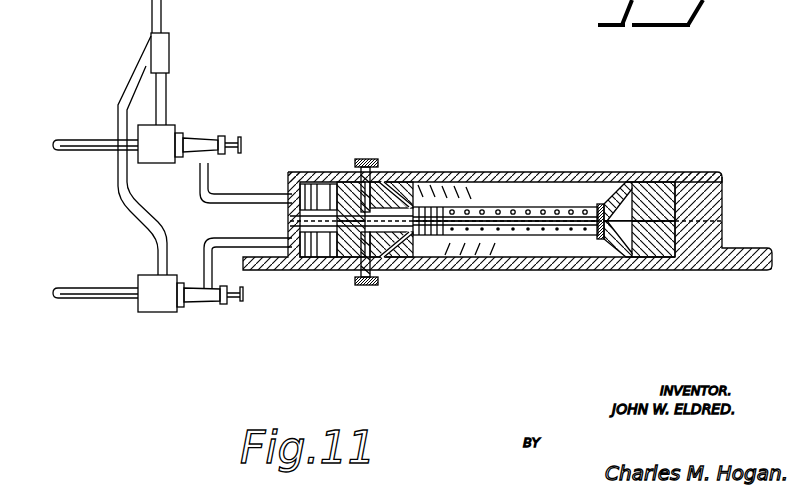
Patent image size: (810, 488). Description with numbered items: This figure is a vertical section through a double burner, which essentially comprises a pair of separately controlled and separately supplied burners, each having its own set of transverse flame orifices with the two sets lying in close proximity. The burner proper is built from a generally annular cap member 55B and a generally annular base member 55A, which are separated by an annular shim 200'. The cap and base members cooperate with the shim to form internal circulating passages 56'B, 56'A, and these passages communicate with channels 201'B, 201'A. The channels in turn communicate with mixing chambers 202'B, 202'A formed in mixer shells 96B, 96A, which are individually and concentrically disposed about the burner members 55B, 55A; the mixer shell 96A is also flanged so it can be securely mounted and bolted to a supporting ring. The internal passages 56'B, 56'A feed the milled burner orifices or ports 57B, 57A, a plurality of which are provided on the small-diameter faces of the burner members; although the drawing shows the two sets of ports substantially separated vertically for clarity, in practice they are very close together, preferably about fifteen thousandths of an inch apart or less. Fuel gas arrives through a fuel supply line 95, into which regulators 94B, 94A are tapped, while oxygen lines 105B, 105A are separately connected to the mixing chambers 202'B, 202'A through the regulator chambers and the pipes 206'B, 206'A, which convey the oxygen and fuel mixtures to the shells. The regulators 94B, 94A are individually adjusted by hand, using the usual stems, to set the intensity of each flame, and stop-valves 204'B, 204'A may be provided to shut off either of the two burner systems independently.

The supply pipe 95 is at (162, 16).
The oxygen line 105B is at (75, 148).
The oxygen line 105A is at (110, 292).
The regulator 94B is at (203, 142).
The regulator 94A is at (203, 300).
The pipe 206'B is at (218, 183).
The pipe 206'A is at (231, 251).
The mixer shell 96B is at (290, 171).
The mixer shell 96A is at (277, 263).
The annular shim 200' is at (723, 221).
The mixing chamber 202'B is at (316, 167).
The mixing chamber 202'A is at (306, 280).
The channel 201'B is at (346, 182).
The channel 201'A is at (340, 263).
The stop-valve 204'B is at (391, 170).
The stop-valve 204'A is at (389, 285).
The internal circulating passage 56'B is at (417, 177).
The internal circulating passage 56'A is at (409, 266).
The burner orifices 57B is at (505, 210).
The burner orifices 57A is at (535, 232).
The cap member 55B is at (646, 186).
The base member 55A is at (648, 256).